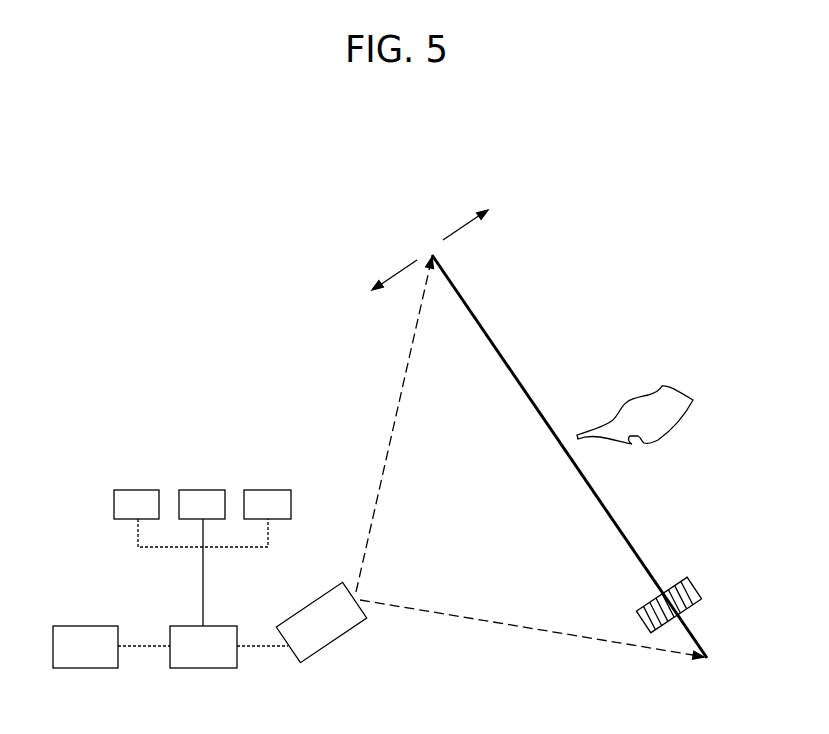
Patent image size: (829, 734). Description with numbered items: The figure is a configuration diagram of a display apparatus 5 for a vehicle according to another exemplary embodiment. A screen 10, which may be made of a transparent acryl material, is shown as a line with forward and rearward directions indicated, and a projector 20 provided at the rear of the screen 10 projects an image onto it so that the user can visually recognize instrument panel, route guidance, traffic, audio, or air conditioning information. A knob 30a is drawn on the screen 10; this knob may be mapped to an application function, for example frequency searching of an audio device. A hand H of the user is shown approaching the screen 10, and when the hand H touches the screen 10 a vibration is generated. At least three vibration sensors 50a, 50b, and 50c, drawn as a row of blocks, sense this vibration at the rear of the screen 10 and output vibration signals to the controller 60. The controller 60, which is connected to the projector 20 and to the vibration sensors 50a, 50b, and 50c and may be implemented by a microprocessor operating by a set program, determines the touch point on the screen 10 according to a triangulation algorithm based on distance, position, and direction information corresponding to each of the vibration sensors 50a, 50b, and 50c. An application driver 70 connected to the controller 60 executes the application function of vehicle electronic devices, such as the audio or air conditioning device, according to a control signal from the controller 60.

The display apparatus 5 is at (427, 240).
The screen 10 is at (483, 325).
The hand H is at (635, 398).
The knob 30a is at (698, 593).
The projector 20 is at (337, 642).
The controller 60 is at (207, 668).
The application driver 70 is at (87, 668).
The vibration sensor 50a is at (135, 490).
The vibration sensor 50b is at (200, 490).
The vibration sensor 50c is at (267, 490).